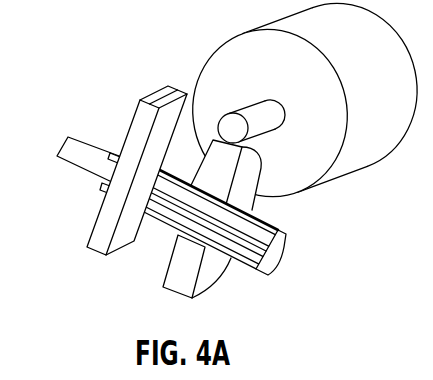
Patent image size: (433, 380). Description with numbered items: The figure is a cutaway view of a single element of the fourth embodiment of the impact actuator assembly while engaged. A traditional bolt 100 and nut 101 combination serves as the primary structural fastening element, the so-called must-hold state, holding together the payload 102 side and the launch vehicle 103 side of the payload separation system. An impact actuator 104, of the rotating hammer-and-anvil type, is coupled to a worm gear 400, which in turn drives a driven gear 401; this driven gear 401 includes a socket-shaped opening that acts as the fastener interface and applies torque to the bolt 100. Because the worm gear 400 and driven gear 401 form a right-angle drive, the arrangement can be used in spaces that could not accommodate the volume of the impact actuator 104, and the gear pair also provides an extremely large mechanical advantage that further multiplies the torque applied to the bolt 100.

The bolt 100 is at (98, 163).
The nut 101 is at (108, 185).
The payload 102 is at (135, 127).
The launch vehicle 103 is at (167, 100).
The impact actuator 104 is at (240, 68).
The worm gear 400 is at (273, 130).
The driven gear 401 is at (243, 182).